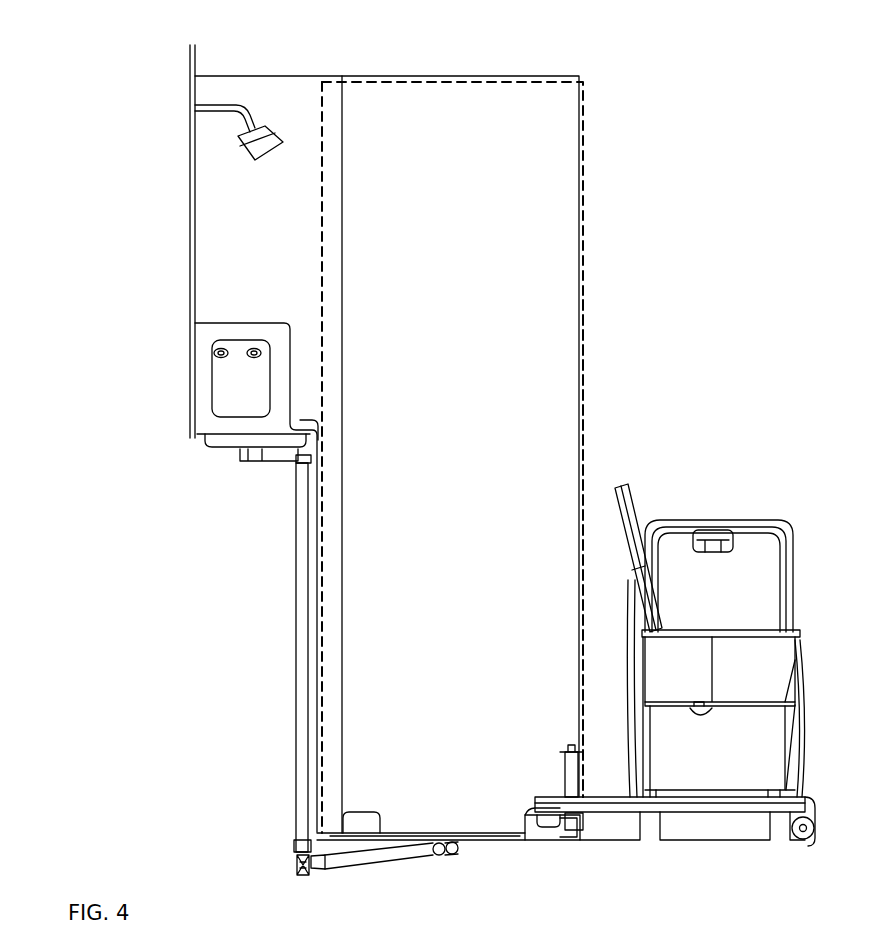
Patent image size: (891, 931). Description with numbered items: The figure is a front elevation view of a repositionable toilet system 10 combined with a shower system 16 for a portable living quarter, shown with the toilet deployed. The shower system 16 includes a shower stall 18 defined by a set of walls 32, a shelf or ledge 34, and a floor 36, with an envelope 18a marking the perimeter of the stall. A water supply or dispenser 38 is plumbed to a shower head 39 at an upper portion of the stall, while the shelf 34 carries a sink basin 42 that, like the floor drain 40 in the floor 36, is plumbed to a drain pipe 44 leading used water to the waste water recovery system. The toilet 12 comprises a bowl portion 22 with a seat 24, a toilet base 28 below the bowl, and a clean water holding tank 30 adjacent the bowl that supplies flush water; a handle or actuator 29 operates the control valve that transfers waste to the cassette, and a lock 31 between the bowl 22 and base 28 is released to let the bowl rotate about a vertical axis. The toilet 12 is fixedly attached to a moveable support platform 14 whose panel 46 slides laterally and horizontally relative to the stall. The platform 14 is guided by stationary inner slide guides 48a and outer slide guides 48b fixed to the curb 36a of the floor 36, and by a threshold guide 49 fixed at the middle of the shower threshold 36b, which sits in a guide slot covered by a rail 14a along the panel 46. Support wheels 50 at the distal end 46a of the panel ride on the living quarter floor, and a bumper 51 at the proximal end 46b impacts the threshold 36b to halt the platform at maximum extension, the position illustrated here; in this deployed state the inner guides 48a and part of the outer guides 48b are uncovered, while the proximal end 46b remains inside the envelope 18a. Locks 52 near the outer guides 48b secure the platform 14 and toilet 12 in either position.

The repositionable toilet system 10 is at (740, 610).
The toilet 12 is at (808, 688).
The moveable toilet support platform 14 is at (702, 808).
The cover or rail 14a is at (603, 800).
The shower system 16 is at (548, 72).
The shower stall 18 is at (408, 105).
The envelope of the stall 18a is at (586, 345).
The bowl portion 22 is at (783, 657).
The seat 24 is at (629, 512).
The toilet base 28 is at (752, 770).
The actuator or handle 29 is at (711, 553).
The clean water holding tank 30 is at (680, 543).
The lock 31 is at (696, 714).
The walls 32 is at (192, 222).
The shelf or ledge 34 is at (306, 426).
The basin or floor 36 is at (487, 830).
The curb 36a is at (492, 841).
The shower threshold 36b is at (579, 832).
The water supply or dispenser 38 is at (236, 376).
The shower head 39 is at (256, 136).
The floor drain 40 is at (462, 838).
The sink basin 42 is at (229, 442).
The drain pipe 44 is at (296, 571).
The panel or base 46 is at (667, 814).
The distal end 46a is at (822, 828).
The proximal end 46b is at (530, 790).
The inner supports or slide guides 48a is at (385, 820).
The outer supports or slide guides 48b is at (550, 829).
The threshold platform retainer and slide guide 49 is at (588, 826).
The support wheels 50 is at (795, 838).
The stop or bumper 51 is at (530, 814).
The locks 52 is at (577, 765).